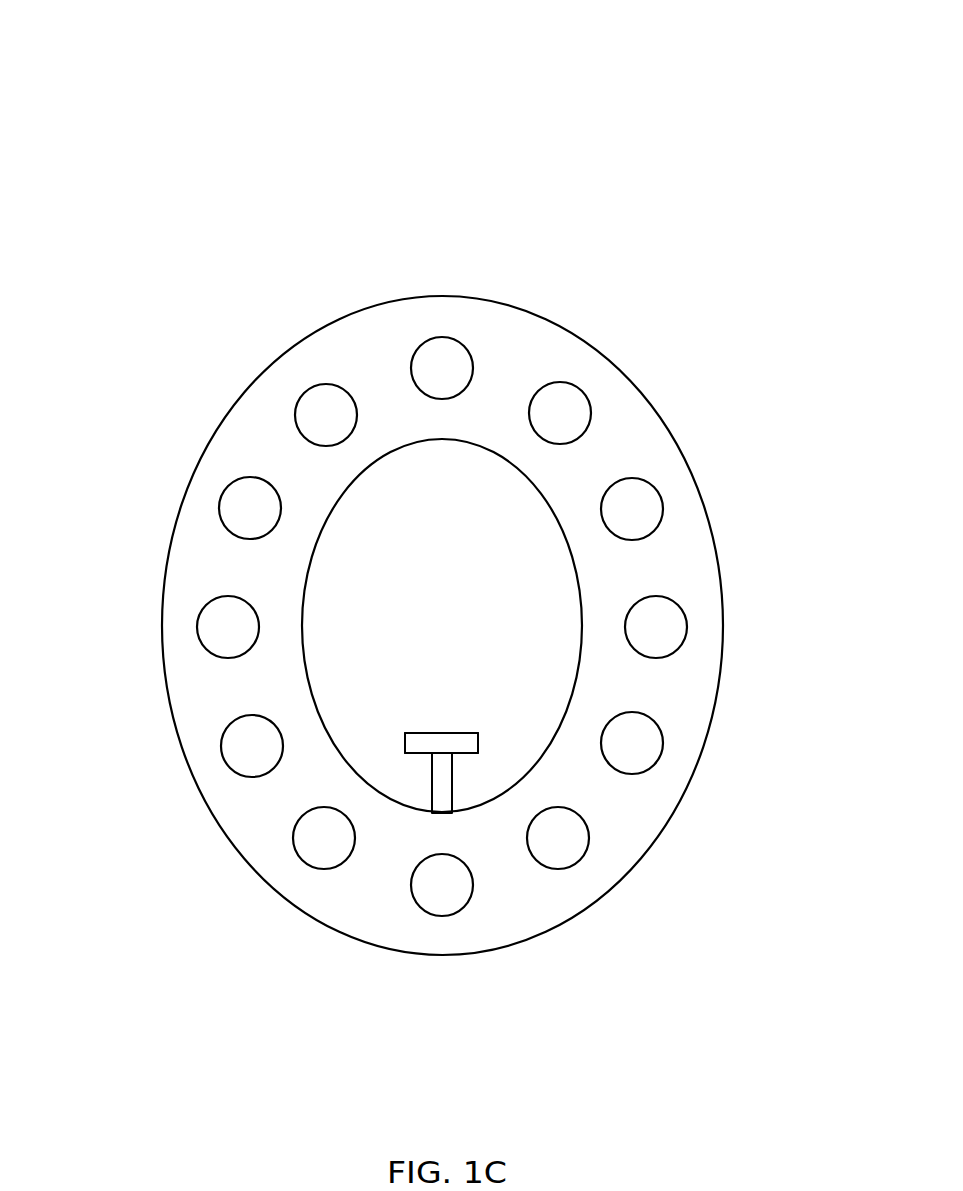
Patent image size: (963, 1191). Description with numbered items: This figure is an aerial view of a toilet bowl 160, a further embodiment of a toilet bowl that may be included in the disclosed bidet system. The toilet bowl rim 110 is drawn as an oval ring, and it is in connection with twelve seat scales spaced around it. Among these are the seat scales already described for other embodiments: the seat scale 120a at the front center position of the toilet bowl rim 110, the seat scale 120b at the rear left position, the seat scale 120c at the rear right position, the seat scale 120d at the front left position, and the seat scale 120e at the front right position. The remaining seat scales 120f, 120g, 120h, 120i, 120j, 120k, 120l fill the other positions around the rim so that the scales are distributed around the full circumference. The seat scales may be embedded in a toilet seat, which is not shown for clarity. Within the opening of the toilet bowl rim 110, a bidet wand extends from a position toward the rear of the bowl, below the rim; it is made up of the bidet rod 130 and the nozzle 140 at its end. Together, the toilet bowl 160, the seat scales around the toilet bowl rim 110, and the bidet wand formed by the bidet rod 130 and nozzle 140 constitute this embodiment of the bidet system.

The toilet bowl 160 is at (131, 68).
The toilet bowl rim 110 is at (497, 350).
The seat scale 120a is at (436, 370).
The seat scale 120b is at (252, 746).
The seat scale 120c is at (631, 741).
The seat scale 120d is at (247, 507).
The seat scale 120e is at (629, 506).
The seat scale 120f is at (229, 627).
The seat scale 120g is at (324, 838).
The seat scale 120h is at (440, 895).
The seat scale 120i is at (563, 843).
The seat scale 120j is at (661, 628).
The seat scale 120k is at (561, 414).
The seat scale 120l is at (323, 410).
The bidet rod 130 is at (432, 782).
The nozzle 140 is at (445, 733).